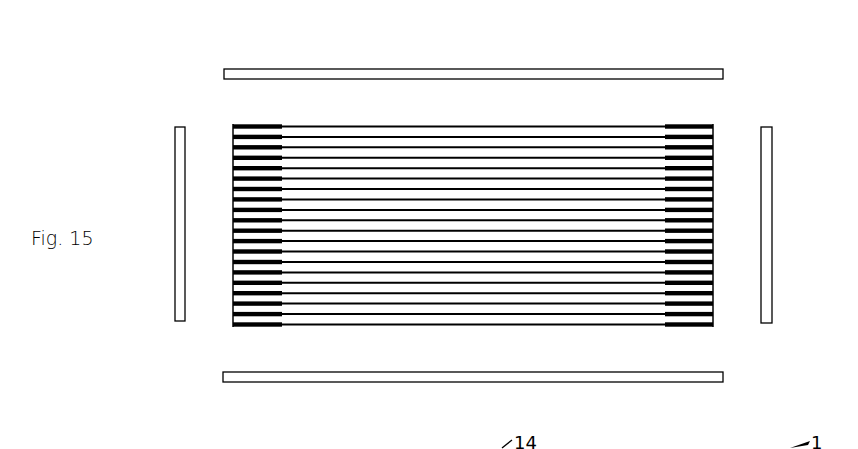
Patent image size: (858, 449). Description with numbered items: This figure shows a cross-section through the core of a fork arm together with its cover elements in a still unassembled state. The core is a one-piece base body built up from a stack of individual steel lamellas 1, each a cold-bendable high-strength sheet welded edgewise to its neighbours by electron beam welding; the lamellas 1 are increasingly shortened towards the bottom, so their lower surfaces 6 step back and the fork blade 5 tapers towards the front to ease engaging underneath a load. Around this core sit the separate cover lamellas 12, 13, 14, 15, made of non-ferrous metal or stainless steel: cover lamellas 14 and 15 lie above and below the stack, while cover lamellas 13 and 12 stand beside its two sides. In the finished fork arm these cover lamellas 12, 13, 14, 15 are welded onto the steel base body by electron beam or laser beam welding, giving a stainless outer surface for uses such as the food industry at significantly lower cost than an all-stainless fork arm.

The lamella 1 is at (242, 151).
The fork blade 5 is at (568, 175).
The lower surface 6 is at (236, 311).
The cover lamella 12 is at (766, 209).
The cover lamella 13 is at (180, 310).
The cover lamella 14 is at (443, 75).
The cover lamella 15 is at (430, 374).